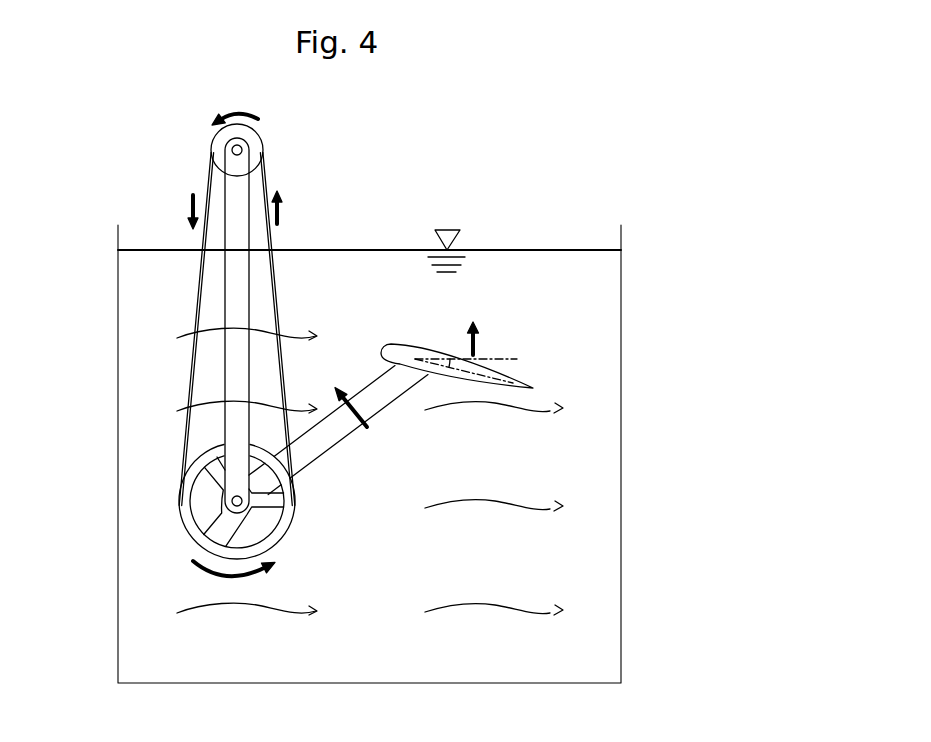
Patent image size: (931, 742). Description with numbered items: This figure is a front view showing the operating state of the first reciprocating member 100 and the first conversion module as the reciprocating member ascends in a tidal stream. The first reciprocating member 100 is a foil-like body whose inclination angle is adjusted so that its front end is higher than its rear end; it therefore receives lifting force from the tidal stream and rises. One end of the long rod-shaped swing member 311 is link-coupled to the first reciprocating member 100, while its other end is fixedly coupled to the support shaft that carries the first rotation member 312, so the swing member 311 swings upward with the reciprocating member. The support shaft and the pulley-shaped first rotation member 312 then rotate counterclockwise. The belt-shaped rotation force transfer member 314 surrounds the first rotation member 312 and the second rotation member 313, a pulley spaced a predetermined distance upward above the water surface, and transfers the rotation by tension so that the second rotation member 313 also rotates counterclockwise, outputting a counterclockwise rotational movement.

The first reciprocating member 100 is at (388, 348).
The swing member 311 is at (367, 394).
The first rotation member 312 is at (185, 518).
The second rotation member 313 is at (258, 142).
The rotation force transfer member 314 is at (195, 320).